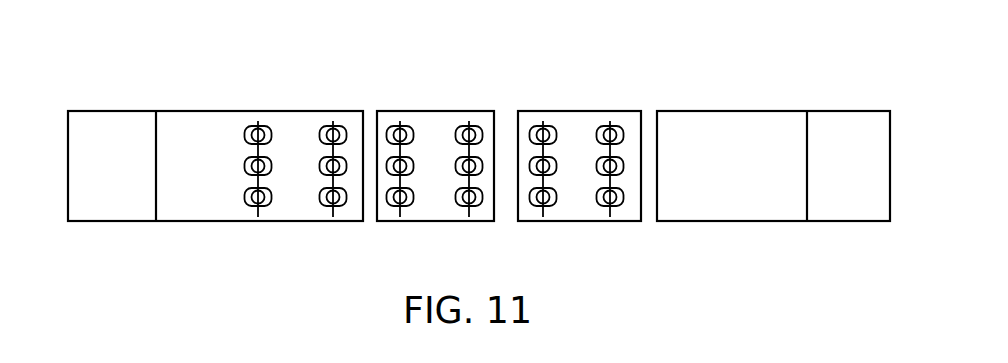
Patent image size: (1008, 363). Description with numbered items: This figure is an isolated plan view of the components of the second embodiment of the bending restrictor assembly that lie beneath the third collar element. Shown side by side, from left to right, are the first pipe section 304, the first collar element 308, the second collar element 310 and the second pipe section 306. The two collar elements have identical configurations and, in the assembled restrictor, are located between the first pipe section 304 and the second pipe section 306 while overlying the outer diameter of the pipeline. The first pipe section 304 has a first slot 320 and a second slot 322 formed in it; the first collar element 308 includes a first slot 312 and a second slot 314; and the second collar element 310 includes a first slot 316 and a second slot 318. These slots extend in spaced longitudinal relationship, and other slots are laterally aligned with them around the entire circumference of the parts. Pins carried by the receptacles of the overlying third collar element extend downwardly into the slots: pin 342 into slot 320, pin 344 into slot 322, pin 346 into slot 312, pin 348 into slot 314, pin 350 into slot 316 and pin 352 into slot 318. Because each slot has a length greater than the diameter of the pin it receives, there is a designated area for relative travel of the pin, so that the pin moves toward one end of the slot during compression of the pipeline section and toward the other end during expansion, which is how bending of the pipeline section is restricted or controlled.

The first pipe section 304 is at (290, 111).
The second pipe section 306 is at (697, 111).
The first collar element 308 is at (454, 111).
The second collar element 310 is at (588, 111).
The first slot 312 is at (400, 132).
The second slot 314 is at (472, 132).
The first slot 316 is at (547, 132).
The second slot 318 is at (611, 130).
The first slot 320 is at (248, 142).
The second slot 322 is at (324, 146).
The pin 342 is at (252, 129).
The pin 344 is at (333, 124).
The pin 346 is at (398, 128).
The pin 348 is at (468, 129).
The pin 350 is at (543, 130).
The pin 352 is at (608, 132).